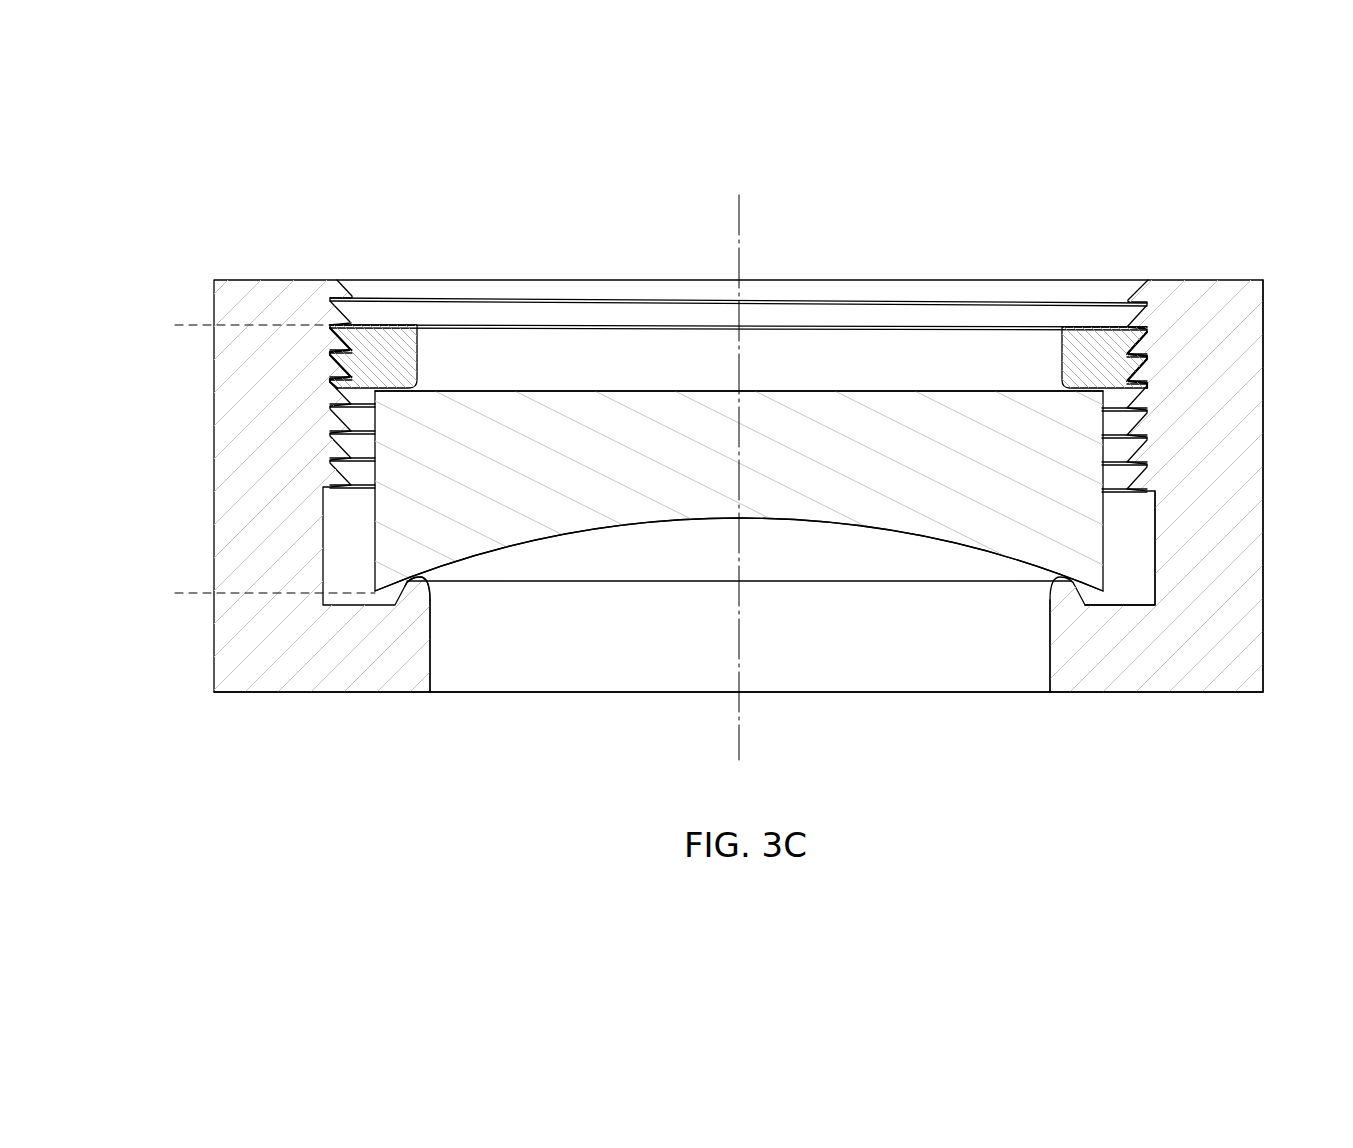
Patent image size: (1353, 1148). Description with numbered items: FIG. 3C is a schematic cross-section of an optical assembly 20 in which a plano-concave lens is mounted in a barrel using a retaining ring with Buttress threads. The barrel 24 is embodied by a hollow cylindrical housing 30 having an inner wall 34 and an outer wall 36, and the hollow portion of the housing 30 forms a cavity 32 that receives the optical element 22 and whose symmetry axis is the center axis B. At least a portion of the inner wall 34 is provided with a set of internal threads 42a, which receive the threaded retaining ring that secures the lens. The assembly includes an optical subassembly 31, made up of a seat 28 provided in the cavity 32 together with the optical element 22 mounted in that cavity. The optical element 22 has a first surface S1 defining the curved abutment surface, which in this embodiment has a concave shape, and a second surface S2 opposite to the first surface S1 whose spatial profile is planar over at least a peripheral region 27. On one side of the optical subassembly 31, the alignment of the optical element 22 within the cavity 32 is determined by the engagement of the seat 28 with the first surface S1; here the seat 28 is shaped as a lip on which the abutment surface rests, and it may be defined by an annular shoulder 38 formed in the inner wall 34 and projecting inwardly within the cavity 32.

The optical assembly 20 is at (1064, 196).
The optical element 22 is at (938, 517).
The barrel 24 is at (1244, 302).
The peripheral region 27 is at (388, 387).
The seat 28 is at (1033, 585).
The hollow cylindrical housing 30 is at (1248, 390).
The optical subassembly 31 is at (150, 325).
The cavity 32 is at (674, 668).
The inner wall 34 is at (1150, 548).
The outer wall 36 is at (1263, 655).
The annular shoulder 38 is at (420, 600).
The internal threads 42a is at (1140, 345).
The center axis B is at (738, 216).
The first surface S1 is at (848, 527).
The second surface S2 is at (944, 388).